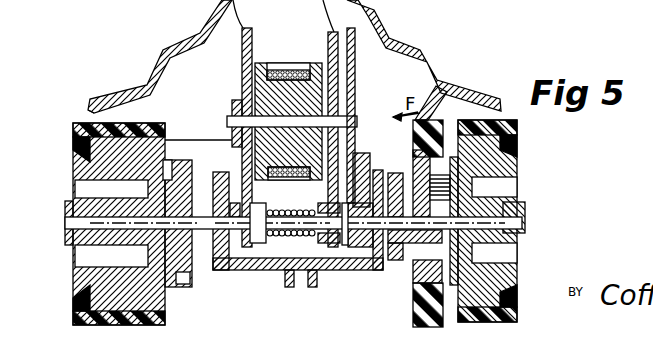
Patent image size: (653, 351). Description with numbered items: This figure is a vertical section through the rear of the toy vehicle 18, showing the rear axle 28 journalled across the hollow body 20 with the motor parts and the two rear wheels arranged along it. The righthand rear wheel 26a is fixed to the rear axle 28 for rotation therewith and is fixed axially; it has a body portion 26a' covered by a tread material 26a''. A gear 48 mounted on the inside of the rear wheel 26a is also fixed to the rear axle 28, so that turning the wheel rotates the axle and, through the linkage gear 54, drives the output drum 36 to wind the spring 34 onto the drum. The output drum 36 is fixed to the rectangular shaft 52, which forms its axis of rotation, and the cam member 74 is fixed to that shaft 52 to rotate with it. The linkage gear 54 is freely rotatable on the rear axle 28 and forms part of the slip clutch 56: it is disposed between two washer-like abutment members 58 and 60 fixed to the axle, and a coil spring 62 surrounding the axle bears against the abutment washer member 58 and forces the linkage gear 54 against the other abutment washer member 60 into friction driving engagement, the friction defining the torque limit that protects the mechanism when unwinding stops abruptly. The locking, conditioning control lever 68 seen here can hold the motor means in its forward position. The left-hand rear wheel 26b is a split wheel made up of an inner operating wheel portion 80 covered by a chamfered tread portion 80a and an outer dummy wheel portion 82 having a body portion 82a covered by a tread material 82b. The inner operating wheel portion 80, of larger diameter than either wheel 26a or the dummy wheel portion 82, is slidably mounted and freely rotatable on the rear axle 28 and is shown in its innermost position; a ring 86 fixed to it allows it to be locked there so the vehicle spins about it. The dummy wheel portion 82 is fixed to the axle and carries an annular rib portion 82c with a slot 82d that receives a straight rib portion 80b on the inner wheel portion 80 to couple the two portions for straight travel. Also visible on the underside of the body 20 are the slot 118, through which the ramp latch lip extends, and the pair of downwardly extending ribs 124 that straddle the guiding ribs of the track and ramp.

The toy vehicle 18 is at (195, 30).
The body 20 is at (118, 92).
The righthand rear wheel 26a is at (103, 221).
The body portion 26a' is at (103, 224).
The tread material 26a'' is at (90, 140).
The left-hand rear wheel 26b is at (522, 140).
The rear axle 28 is at (200, 217).
The spring 34 is at (277, 68).
The output drum 36 is at (290, 90).
The gear 48 is at (184, 286).
The rectangular shaft 52 is at (345, 117).
The linkage gear 54 is at (335, 246).
The slip clutch 56 is at (305, 248).
The abutment washer member 58 is at (258, 244).
The abutment washer member 60 is at (338, 247).
The coil spring 62 is at (279, 209).
The locking, conditioning control lever 68 is at (362, 157).
The cam member 74 is at (237, 103).
The inner operating wheel portion 80 is at (450, 114).
The tread portion 80a is at (425, 123).
The straight rib portion 80b is at (443, 165).
The outer dummy wheel portion 82 is at (514, 198).
The body portion 82a is at (500, 290).
The tread material 82b is at (510, 313).
The annular rib portion 82c is at (452, 253).
The slot 82d is at (450, 184).
The ring 86 is at (398, 185).
The slot 118 is at (301, 268).
The ribs 124 is at (287, 273).